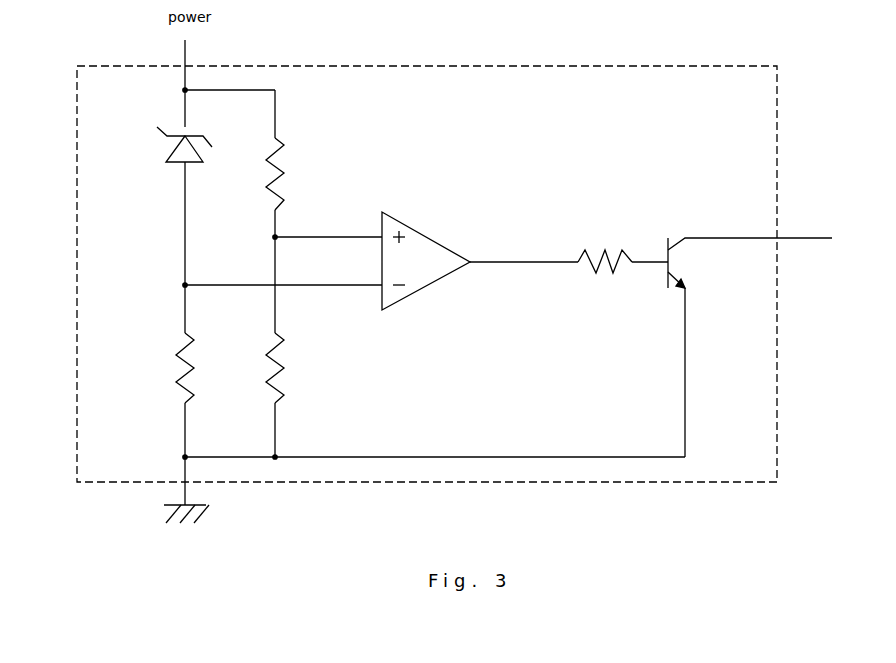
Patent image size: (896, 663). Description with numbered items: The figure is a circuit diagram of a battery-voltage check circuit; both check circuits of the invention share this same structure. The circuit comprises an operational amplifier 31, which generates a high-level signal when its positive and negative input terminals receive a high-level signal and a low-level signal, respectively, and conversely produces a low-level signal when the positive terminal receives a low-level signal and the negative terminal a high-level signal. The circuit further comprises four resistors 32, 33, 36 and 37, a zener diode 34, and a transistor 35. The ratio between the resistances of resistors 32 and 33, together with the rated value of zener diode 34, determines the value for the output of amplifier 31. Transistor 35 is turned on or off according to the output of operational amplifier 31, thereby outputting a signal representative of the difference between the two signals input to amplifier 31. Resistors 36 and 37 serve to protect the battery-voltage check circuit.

The operational amplifier 31 is at (410, 218).
The resistor 32 is at (287, 163).
The resistor 33 is at (287, 355).
The zener diode 34 is at (163, 147).
The transistor 35 is at (665, 275).
The resistor 36 is at (168, 368).
The resistor 37 is at (600, 248).